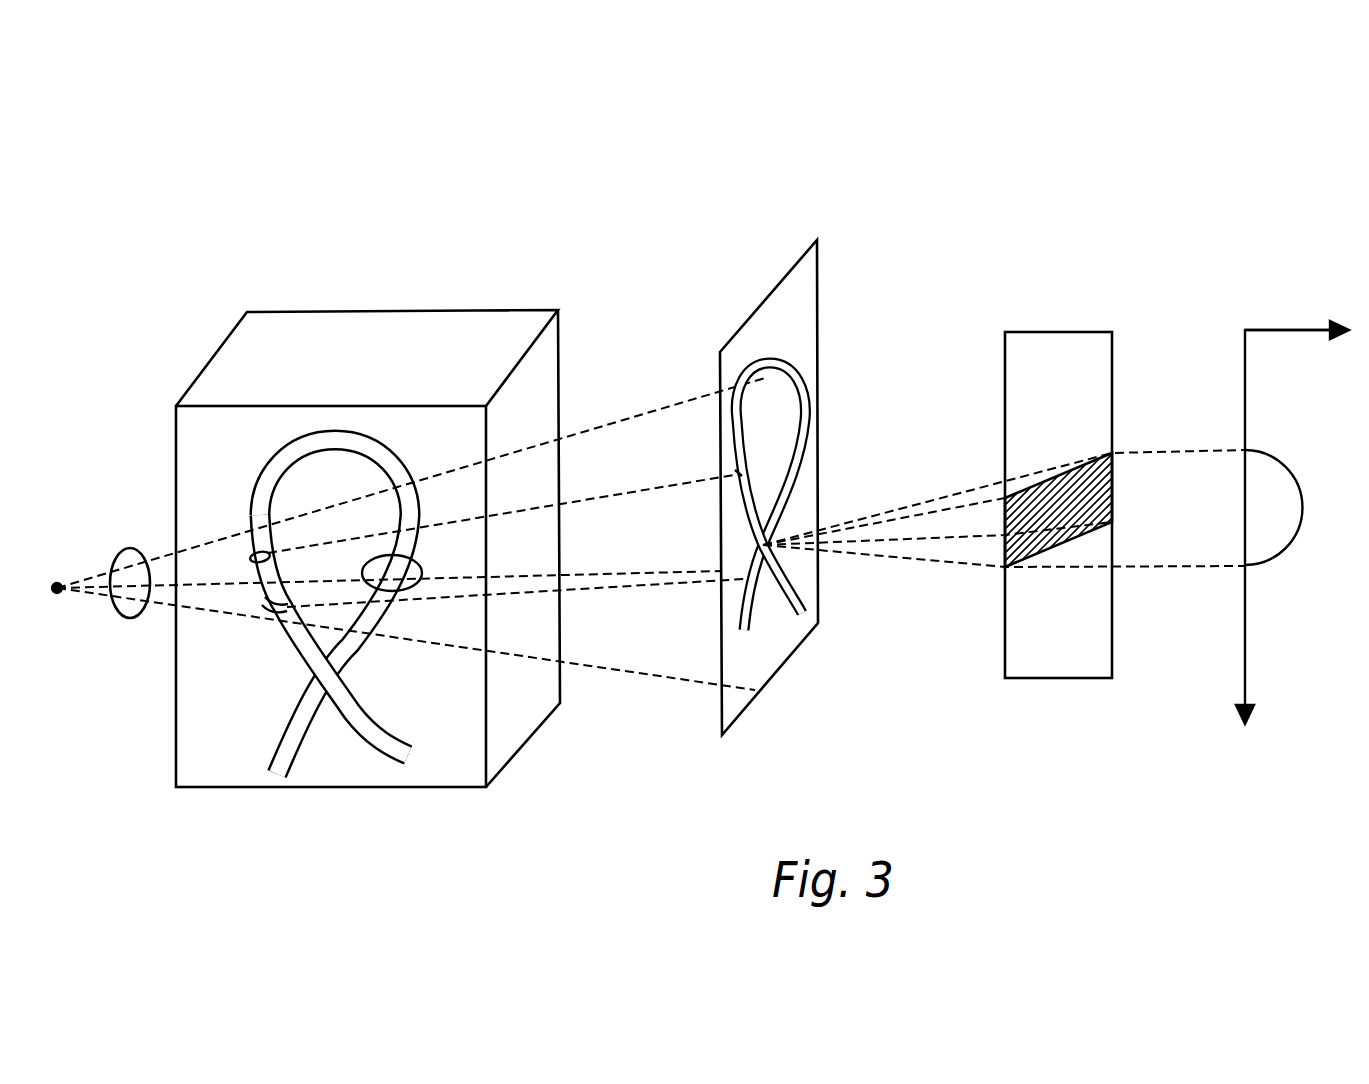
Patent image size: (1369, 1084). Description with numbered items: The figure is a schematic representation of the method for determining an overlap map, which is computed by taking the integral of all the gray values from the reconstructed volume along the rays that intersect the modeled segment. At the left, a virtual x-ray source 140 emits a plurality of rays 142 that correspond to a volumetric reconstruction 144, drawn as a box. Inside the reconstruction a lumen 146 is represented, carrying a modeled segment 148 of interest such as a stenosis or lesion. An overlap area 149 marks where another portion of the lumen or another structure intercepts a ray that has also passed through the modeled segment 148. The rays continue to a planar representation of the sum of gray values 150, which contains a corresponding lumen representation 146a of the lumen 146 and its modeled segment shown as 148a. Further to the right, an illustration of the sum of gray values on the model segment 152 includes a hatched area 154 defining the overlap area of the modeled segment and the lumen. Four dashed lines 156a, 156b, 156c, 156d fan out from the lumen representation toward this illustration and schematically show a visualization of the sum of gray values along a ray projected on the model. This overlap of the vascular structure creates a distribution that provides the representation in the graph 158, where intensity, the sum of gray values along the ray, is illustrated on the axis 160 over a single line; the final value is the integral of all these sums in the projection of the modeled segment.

The virtual x-ray source 140 is at (57, 596).
The rays 142 is at (130, 620).
The volumetric reconstruction 144 is at (393, 342).
The lumen 146 is at (250, 490).
The modeled segment 148 is at (250, 573).
The overlap area 149 is at (423, 570).
The planar representation of the sum of gray values 150 is at (807, 298).
The lumen representation 146a is at (782, 358).
The model segment representation 148a is at (738, 472).
The sum of gray values on the model segment 152 is at (1062, 332).
The area defining the overlap area 154 is at (1112, 500).
The dashed line 156a is at (866, 515).
The dashed line 156b is at (935, 512).
The dashed line 156c is at (875, 540).
The dashed line 156d is at (930, 565).
The graph 158 is at (1265, 258).
The axis 160 is at (1300, 330).